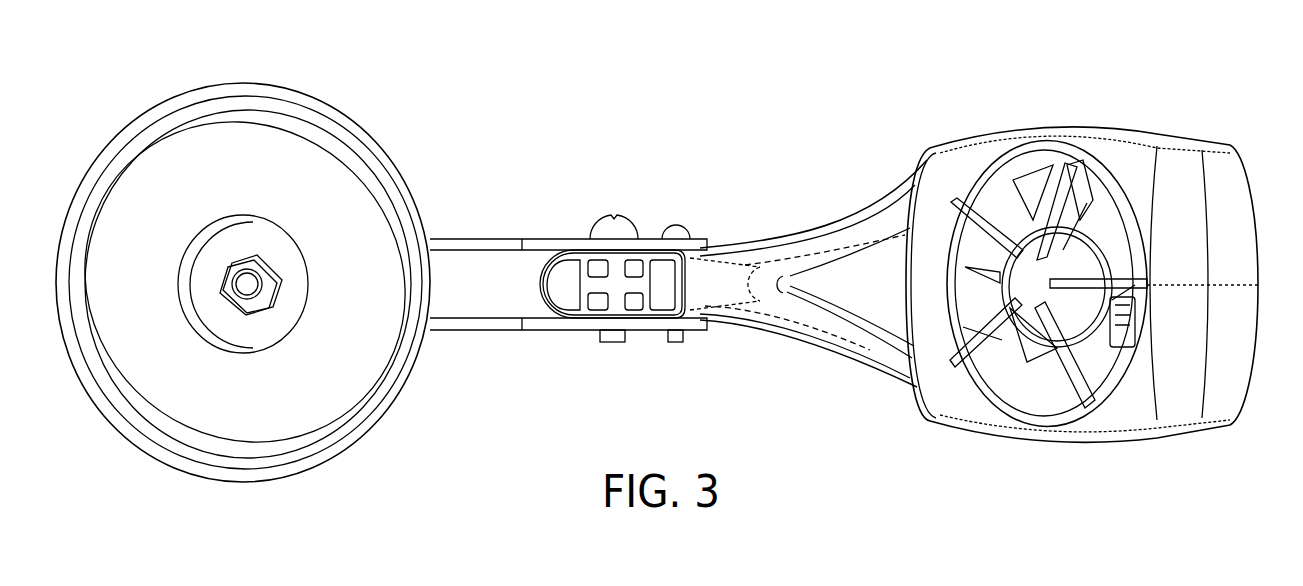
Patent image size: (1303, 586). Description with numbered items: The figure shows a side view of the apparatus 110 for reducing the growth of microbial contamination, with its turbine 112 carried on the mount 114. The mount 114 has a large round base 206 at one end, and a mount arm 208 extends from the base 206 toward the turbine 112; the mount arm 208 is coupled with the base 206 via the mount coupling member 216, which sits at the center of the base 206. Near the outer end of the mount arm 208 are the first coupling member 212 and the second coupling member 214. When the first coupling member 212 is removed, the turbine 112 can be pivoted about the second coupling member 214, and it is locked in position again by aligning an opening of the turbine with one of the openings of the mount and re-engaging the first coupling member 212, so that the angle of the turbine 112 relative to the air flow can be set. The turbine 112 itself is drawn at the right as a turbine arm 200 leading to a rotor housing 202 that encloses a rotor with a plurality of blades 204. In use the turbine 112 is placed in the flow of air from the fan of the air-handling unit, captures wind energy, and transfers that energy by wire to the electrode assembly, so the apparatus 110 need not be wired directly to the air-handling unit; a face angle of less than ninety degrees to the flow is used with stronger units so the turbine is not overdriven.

The apparatus 110 is at (647, 140).
The turbine 112 is at (883, 135).
The mount 114 is at (434, 140).
The link arm 200 is at (824, 244).
The fan housing 202 is at (1128, 412).
The fan blade 204 is at (1031, 175).
The base 206 is at (323, 400).
The mount arm 208 is at (502, 238).
The first coupling member 212 is at (673, 342).
The second coupling member 214 is at (612, 342).
The mount coupling member 216 is at (248, 312).